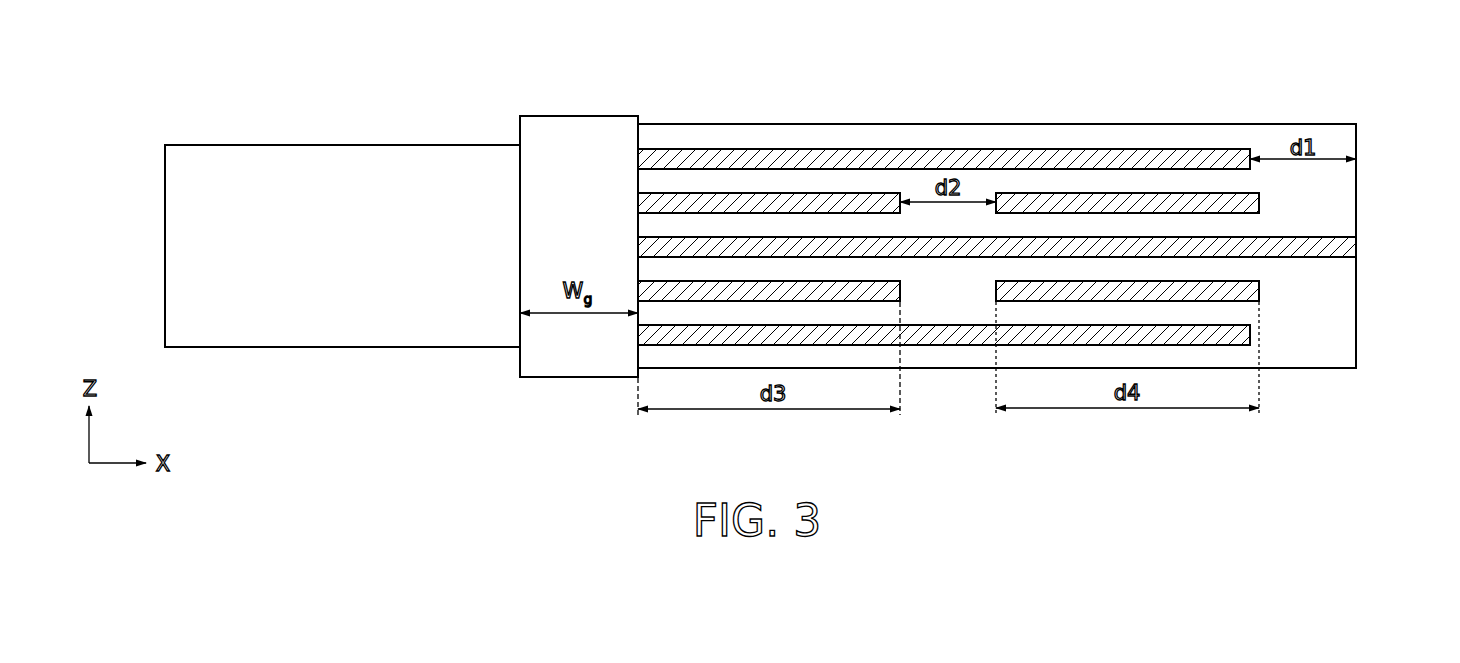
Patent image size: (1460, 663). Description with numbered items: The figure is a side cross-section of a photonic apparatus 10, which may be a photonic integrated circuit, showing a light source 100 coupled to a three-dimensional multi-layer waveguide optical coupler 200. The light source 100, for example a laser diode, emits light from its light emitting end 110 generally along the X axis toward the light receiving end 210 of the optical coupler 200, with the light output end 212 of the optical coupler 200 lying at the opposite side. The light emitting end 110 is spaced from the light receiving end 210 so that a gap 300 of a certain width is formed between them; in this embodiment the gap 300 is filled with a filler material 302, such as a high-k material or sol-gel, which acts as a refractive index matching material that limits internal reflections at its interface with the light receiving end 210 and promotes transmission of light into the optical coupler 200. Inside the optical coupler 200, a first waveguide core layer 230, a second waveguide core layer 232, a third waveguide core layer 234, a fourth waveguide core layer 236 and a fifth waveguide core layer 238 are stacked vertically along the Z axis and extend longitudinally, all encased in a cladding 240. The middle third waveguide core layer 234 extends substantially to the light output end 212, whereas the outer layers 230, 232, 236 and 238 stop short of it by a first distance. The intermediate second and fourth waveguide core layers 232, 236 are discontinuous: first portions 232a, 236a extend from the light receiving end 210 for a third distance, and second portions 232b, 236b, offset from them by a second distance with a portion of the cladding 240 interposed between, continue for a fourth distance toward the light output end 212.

The photonic apparatus 10 is at (92, 31).
The light source 100 is at (345, 160).
The light emitting end 110 is at (528, 157).
The optical coupler 200 is at (951, 406).
The light receiving end 210 is at (631, 157).
The light output end 212 is at (1359, 336).
The first waveguide core layer 230 is at (669, 335).
The second waveguide core layer 232 is at (1264, 284).
The first portion of second waveguide core layer 232a is at (736, 291).
The second portion of second waveguide core layer 232b is at (1100, 290).
The third waveguide core layer 234 is at (803, 247).
The fourth waveguide core layer 236 is at (1264, 196).
The first portion of fourth waveguide core layer 236a is at (873, 203).
The second portion of fourth waveguide core layer 236b is at (1172, 205).
The fifth waveguide core layer 238 is at (946, 163).
The cladding 240 is at (1017, 137).
The gap 300 is at (578, 381).
The filler material 302 is at (581, 128).